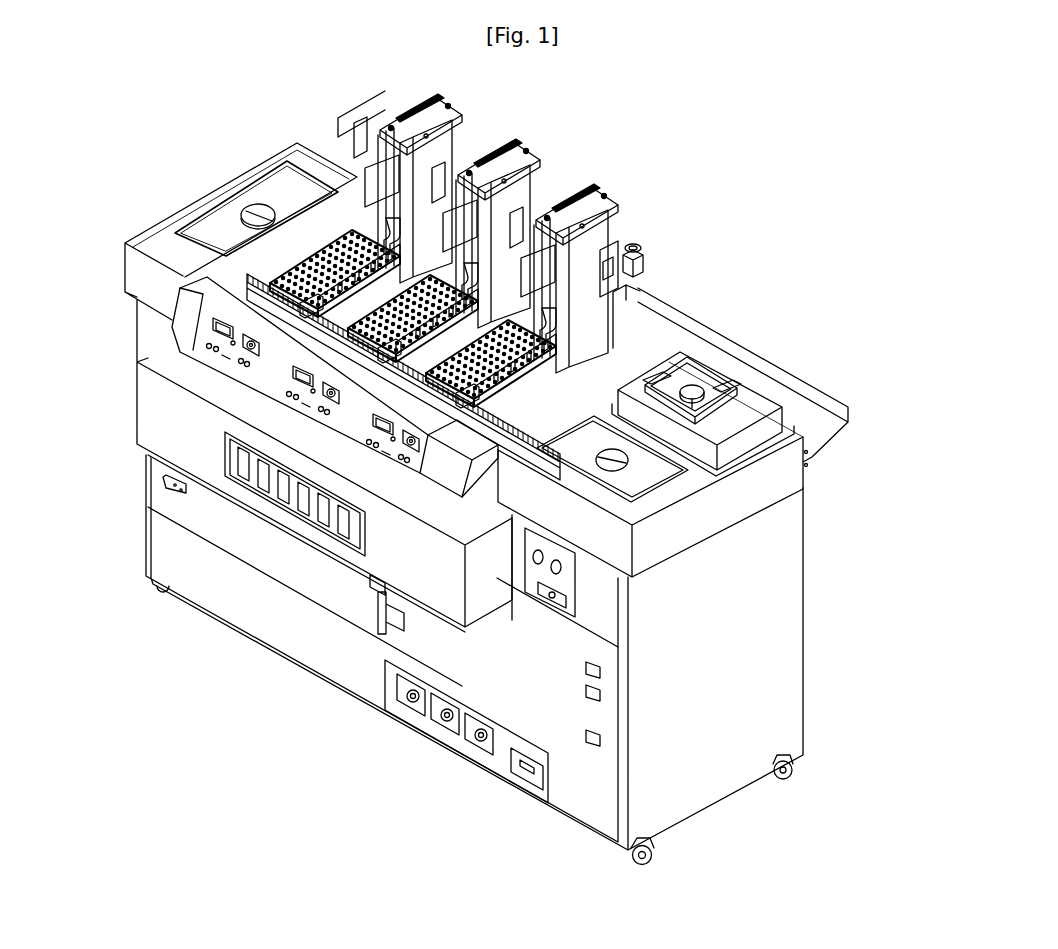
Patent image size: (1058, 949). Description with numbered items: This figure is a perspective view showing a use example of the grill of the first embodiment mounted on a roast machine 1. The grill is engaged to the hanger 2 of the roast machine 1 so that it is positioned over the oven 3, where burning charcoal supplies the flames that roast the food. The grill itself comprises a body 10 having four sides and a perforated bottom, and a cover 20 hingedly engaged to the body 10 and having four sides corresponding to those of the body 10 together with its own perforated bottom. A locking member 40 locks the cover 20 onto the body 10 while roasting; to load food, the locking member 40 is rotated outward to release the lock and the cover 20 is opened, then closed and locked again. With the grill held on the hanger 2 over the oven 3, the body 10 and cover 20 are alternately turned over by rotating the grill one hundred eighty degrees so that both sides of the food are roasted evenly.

The roast machine 1 is at (264, 661).
The hanger 2 is at (614, 372).
The oven 3 is at (313, 371).
The body 10 is at (287, 398).
The cover 20 is at (293, 283).
The locking member 40 is at (262, 373).